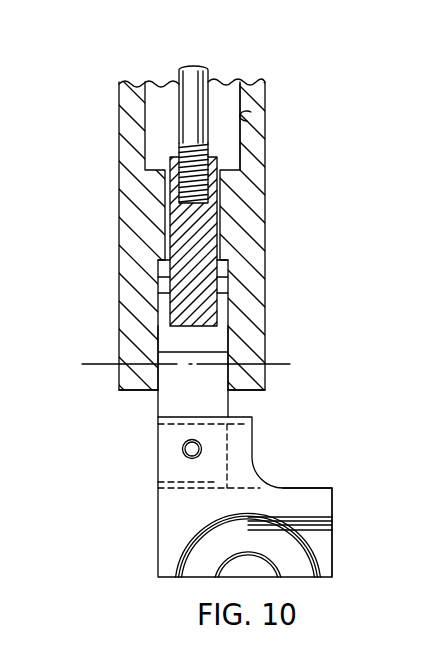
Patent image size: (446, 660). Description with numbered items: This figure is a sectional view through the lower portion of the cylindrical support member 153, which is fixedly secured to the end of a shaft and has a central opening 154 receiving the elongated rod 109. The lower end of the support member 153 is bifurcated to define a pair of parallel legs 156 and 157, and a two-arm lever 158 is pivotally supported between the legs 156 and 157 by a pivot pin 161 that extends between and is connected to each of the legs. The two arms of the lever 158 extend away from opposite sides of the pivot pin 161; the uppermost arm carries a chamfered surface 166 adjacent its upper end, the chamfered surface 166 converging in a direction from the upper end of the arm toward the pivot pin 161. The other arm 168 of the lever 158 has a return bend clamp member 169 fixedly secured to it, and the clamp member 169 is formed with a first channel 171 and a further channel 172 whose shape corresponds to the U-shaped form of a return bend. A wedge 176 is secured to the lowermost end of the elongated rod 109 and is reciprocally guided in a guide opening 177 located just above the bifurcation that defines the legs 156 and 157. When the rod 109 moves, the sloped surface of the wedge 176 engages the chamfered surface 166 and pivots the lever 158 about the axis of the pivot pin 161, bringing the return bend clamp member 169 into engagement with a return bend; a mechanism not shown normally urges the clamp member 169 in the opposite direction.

The elongated rod 109 is at (203, 72).
The cylindrical support member 153 is at (253, 211).
The central opening 154 is at (245, 118).
The parallel leg 156 is at (214, 497).
The parallel leg 157 is at (253, 375).
The two-arm lever 158 is at (215, 342).
The pivot pin 161 is at (100, 362).
The chamfered surface 166 is at (222, 283).
The arm 168 is at (217, 406).
The return bend clamp member 169 is at (320, 502).
The first channel 171 is at (322, 539).
The further channel 172 is at (198, 574).
The wedge 176 is at (180, 249).
The guide opening 177 is at (178, 205).